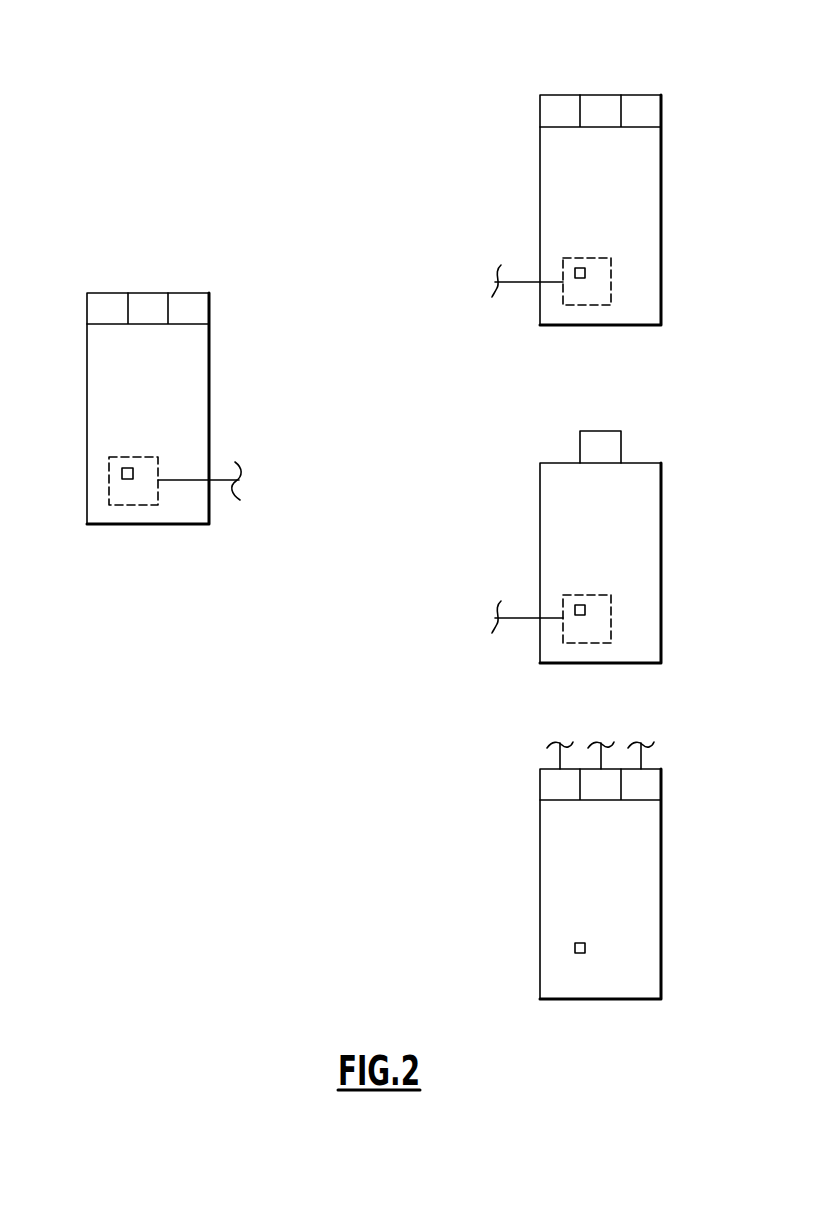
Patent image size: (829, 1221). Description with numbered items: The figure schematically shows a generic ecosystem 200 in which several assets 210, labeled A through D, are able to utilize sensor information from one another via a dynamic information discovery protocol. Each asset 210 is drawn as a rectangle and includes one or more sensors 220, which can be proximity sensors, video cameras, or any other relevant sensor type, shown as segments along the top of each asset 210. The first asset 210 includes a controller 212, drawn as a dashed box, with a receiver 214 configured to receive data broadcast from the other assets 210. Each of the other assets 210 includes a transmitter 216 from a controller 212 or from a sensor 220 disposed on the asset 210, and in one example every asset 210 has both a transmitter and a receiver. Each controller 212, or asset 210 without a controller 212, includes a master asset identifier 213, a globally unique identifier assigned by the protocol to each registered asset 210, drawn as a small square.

The ecosystem 200 is at (318, 76).
The asset 210 is at (209, 368).
The controller 212 is at (138, 505).
The master asset identifier 213 is at (122, 473).
The receiver 214 is at (223, 481).
The transmitter 216 is at (519, 282).
The sensor 220 is at (703, 810).